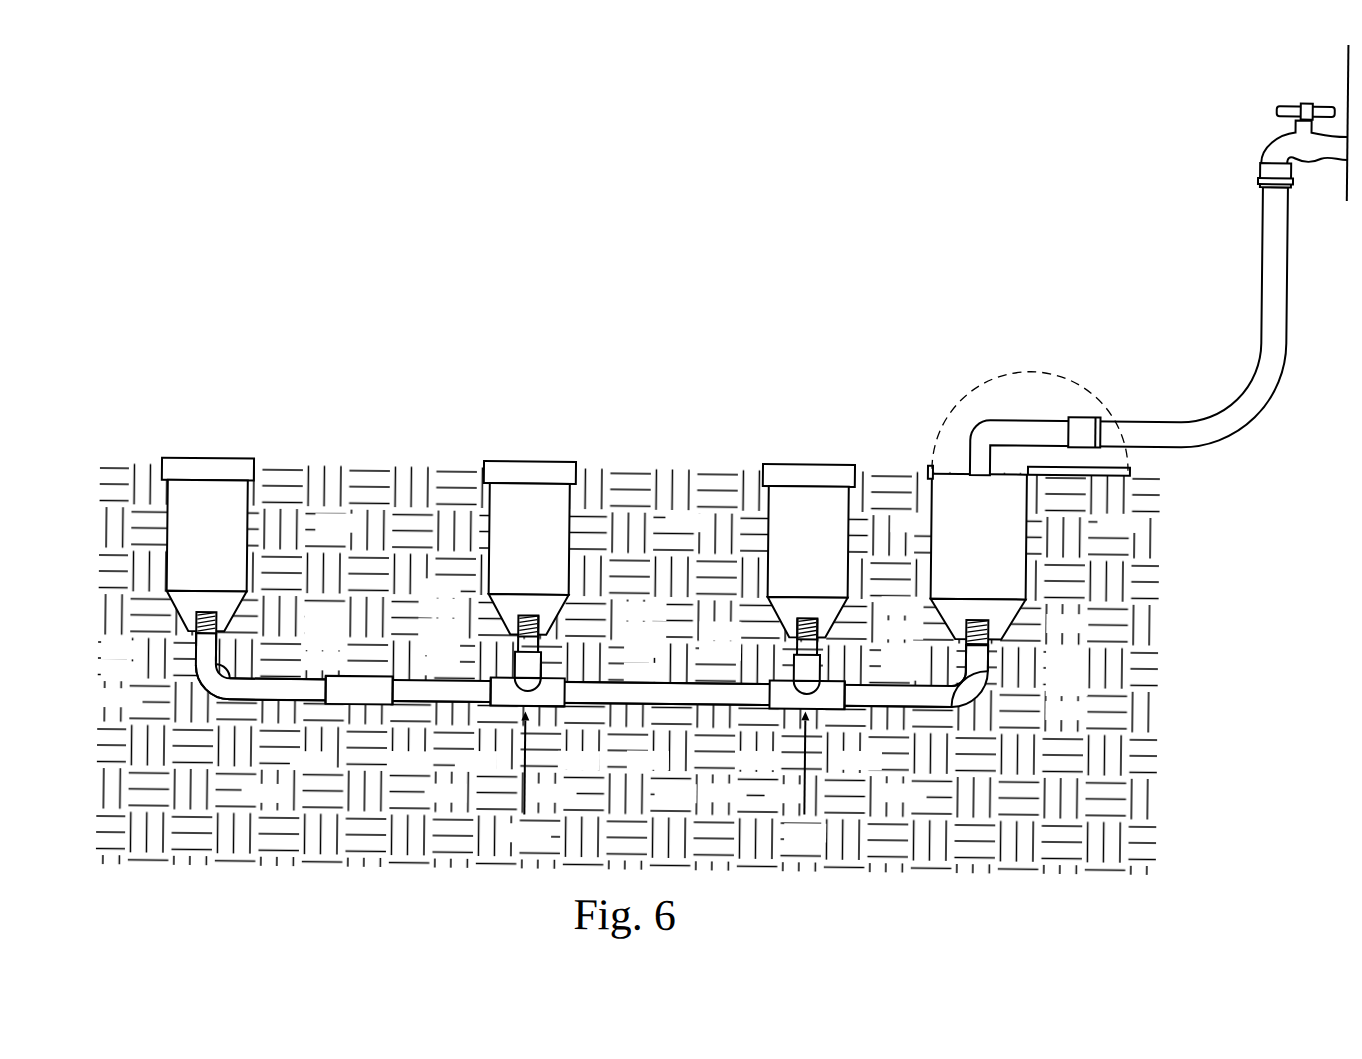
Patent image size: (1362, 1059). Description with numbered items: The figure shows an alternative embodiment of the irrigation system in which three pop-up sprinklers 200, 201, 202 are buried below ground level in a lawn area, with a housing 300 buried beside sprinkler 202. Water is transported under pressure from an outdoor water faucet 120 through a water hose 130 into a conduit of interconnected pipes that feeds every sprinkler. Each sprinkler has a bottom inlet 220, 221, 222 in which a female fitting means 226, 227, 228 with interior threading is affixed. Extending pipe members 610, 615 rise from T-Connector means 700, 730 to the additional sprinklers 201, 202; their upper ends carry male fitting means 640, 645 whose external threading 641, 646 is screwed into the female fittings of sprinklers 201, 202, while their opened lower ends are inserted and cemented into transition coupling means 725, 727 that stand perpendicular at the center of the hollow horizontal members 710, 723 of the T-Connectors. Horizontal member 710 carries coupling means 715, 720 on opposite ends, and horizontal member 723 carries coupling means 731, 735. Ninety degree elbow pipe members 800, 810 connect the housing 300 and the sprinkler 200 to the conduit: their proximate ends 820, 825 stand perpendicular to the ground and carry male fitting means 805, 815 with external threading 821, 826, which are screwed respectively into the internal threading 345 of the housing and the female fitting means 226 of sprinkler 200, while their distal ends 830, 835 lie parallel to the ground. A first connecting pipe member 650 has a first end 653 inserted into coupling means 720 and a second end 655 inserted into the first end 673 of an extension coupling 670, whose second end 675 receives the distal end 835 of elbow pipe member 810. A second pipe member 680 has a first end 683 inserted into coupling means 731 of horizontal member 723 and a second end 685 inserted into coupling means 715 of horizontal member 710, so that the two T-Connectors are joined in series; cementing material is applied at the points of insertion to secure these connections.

The outdoor water faucet 120 is at (1273, 99).
The water hose 130 is at (1178, 409).
The pop-up sprinkler 200 is at (260, 535).
The pop-up sprinkler 201 is at (580, 535).
The pop-up sprinkler 202 is at (858, 537).
The housing 300 is at (1037, 535).
The bottom inlet 220 is at (218, 636).
The bottom inlet 221 is at (541, 632).
The bottom inlet 222 is at (820, 627).
The female fitting means 226 is at (220, 624).
The female fitting means 227 is at (552, 620).
The female fitting means 228 is at (838, 615).
The internal threading 345 is at (991, 622).
The extending pipe member 610 is at (542, 643).
The extending pipe member 615 is at (820, 643).
The male fitting means 640 is at (518, 630).
The external threading 641 is at (516, 652).
The male fitting means 645 is at (806, 632).
The external threading 646 is at (800, 640).
The first connecting pipe member 650 is at (495, 702).
The first end 653 is at (493, 676).
The second end 655 is at (391, 673).
The extension coupling 670 is at (357, 673).
The first end 673 is at (396, 701).
The second end 675 is at (328, 701).
The second pipe member 680 is at (652, 699).
The first end 683 is at (742, 699).
The second end 685 is at (605, 699).
The T-Connector means 700 is at (533, 778).
The horizontal member 710 is at (540, 702).
The coupling means 715 is at (556, 702).
The coupling means 720 is at (475, 699).
The horizontal member 723 is at (802, 702).
The transition coupling means 725 is at (543, 662).
The transition coupling means 727 is at (823, 660).
The T-Connector means 730 is at (808, 778).
The coupling means 731 is at (775, 702).
The coupling means 735 is at (843, 702).
The elbow pipe member 800 is at (978, 695).
The male fitting means 805 is at (981, 636).
The elbow pipe member 810 is at (197, 689).
The male fitting means 815 is at (196, 636).
The proximate end 820 is at (990, 655).
The external threading 821 is at (991, 640).
The proximate end 825 is at (197, 649).
The external threading 826 is at (212, 636).
The distal end 830 is at (882, 699).
The distal end 835 is at (273, 699).